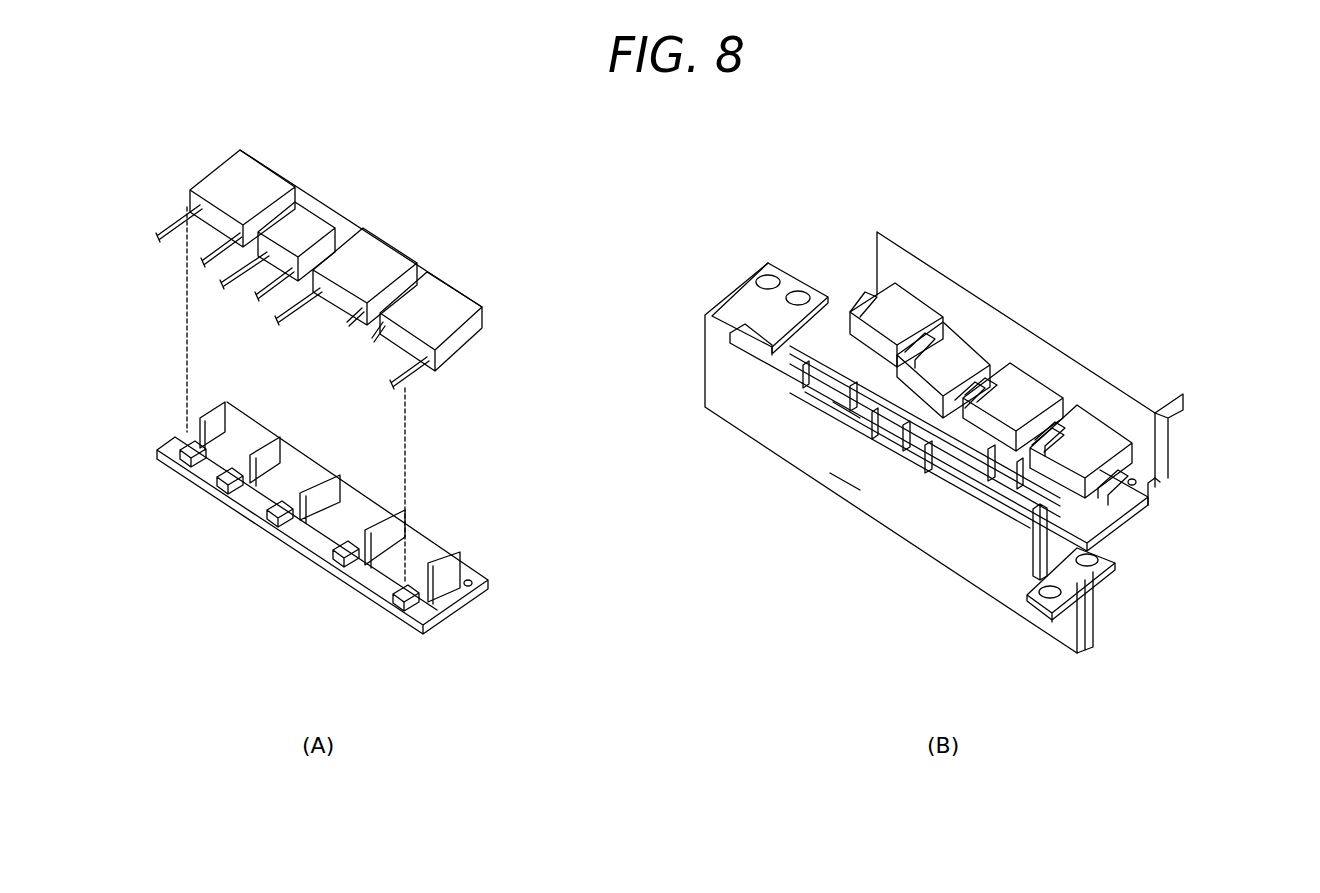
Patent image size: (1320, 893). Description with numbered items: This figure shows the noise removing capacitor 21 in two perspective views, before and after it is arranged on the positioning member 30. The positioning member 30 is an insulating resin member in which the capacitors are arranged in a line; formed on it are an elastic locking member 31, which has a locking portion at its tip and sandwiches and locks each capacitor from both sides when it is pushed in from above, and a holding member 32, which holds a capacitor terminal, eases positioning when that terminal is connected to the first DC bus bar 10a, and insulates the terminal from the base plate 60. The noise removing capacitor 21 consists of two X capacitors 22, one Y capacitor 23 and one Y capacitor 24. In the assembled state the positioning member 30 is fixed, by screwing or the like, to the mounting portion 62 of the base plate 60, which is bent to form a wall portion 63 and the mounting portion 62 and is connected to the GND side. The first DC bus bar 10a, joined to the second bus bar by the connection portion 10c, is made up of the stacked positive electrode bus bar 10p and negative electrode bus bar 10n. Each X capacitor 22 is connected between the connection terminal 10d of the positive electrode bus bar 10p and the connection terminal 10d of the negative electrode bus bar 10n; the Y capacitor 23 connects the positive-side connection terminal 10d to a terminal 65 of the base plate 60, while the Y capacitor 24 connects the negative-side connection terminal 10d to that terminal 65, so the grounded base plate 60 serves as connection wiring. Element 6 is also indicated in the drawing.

The terminal 6 is at (1045, 605).
The first DC bus bar 10a is at (705, 360).
The connection portion 10c is at (772, 263).
The connection terminal 10d is at (833, 402).
The negative electrode bus bar 10n is at (1097, 618).
The positive electrode bus bar 10p is at (830, 473).
The noise removing capacitor 21 is at (340, 97).
The X capacitor 22 is at (260, 160).
The Y capacitor 23 is at (385, 238).
The Y capacitor 24 is at (453, 287).
The positioning member 30 is at (476, 606).
The elastic locking member 31 is at (457, 553).
The holding member 32 is at (390, 593).
The base plate 60 is at (906, 225).
The mounting portion 62 is at (1152, 497).
The wall portion 63 is at (1170, 443).
The terminal 65 is at (986, 460).